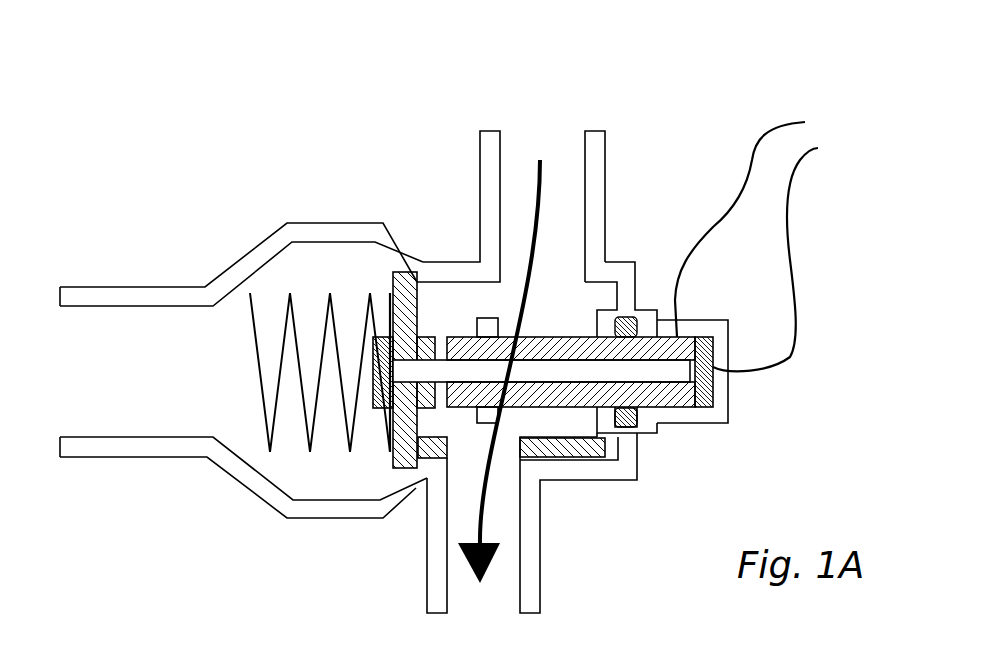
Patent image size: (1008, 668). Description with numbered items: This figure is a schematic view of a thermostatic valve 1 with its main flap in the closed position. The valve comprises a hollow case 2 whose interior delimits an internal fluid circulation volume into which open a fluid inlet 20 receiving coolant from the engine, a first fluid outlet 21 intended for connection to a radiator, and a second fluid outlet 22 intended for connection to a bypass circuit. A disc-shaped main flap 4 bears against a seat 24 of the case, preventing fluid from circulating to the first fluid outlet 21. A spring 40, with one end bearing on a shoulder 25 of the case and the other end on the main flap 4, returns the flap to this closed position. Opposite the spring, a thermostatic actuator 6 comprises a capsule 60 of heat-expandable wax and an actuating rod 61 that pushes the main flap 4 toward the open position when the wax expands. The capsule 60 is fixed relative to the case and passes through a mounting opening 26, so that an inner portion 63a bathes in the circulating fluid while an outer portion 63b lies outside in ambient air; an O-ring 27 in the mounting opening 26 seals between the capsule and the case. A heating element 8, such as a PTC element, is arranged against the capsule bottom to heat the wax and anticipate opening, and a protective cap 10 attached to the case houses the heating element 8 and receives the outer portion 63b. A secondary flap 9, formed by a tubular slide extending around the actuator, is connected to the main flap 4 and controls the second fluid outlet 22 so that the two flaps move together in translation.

The thermostatic valve 1 is at (580, 74).
The case 2 is at (620, 272).
The main flap 4 is at (394, 290).
The thermostatic actuator 6 is at (582, 326).
The heating element 8 is at (712, 342).
The secondary flap 9 is at (573, 458).
The protective cap 10 is at (715, 415).
The fluid inlet 20 is at (595, 147).
The first fluid outlet 21 is at (97, 447).
The second fluid outlet 22 is at (527, 595).
The seat 24 is at (407, 262).
The shoulder 25 is at (243, 265).
The mounting opening 26 is at (648, 328).
The O-ring 27 is at (642, 428).
The spring 40 is at (247, 330).
The capsule 60 is at (556, 337).
The actuating rod 61 is at (438, 365).
The inner portion 63a is at (510, 420).
The outer portion 63b is at (692, 410).